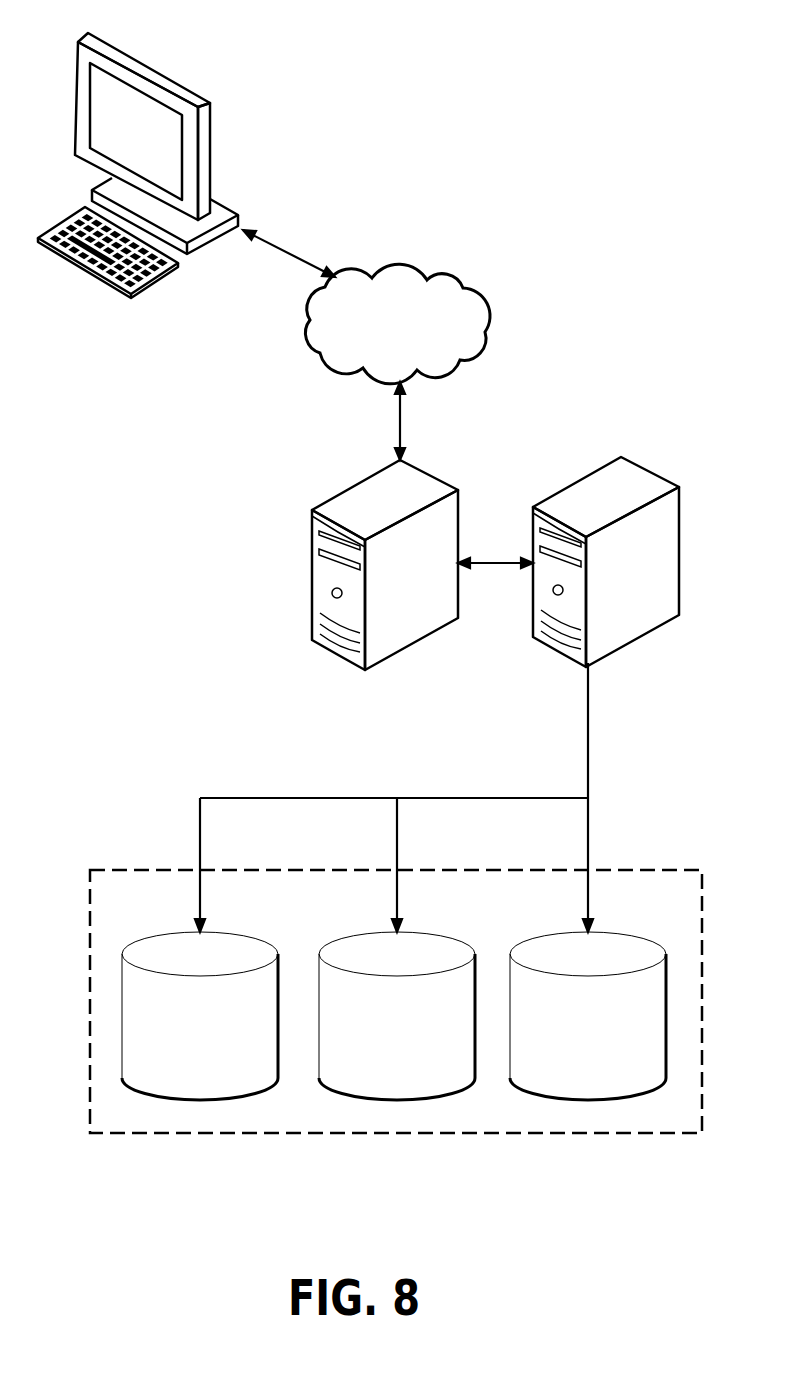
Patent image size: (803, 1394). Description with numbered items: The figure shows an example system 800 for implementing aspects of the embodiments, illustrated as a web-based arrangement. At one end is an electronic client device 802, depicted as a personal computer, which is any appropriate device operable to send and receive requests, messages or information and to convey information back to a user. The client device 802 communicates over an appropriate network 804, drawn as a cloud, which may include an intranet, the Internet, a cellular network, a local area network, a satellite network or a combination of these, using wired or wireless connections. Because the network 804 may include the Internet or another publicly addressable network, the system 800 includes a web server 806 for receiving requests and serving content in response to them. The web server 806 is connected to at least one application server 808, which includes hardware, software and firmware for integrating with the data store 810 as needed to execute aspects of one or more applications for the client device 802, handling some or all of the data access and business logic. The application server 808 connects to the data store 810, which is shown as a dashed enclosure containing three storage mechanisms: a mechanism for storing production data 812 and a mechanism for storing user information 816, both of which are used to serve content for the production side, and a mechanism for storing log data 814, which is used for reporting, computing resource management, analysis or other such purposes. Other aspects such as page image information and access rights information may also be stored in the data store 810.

The system 800 is at (643, 312).
The electronic client device 802 is at (158, 68).
The network 804 is at (438, 279).
The web server 806 is at (312, 557).
The application server 808 is at (558, 655).
The data store 810 is at (128, 1133).
The production data 812 is at (198, 1100).
The log data 814 is at (400, 1100).
The user information 816 is at (588, 1098).